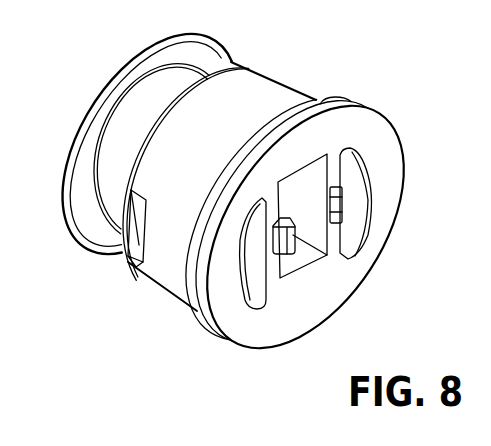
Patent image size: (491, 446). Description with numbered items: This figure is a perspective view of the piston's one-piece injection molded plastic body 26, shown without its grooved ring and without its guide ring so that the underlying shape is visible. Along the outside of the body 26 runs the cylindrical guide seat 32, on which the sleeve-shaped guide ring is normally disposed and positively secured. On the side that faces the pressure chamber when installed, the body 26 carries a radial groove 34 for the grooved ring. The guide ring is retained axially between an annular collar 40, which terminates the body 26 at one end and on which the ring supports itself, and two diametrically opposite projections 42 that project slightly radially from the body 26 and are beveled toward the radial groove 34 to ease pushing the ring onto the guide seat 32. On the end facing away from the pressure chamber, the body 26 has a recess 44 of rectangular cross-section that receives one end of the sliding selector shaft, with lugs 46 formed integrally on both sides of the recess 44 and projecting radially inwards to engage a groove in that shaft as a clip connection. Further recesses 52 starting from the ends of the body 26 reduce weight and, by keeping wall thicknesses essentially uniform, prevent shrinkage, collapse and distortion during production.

The body 26 is at (335, 273).
The guide seat 32 is at (204, 167).
The radial groove 34 is at (137, 118).
The annular collar 40 is at (330, 96).
The projections 42 is at (125, 258).
The recess 44 is at (320, 208).
The lugs 46 is at (287, 256).
The recesses 52 is at (350, 186).